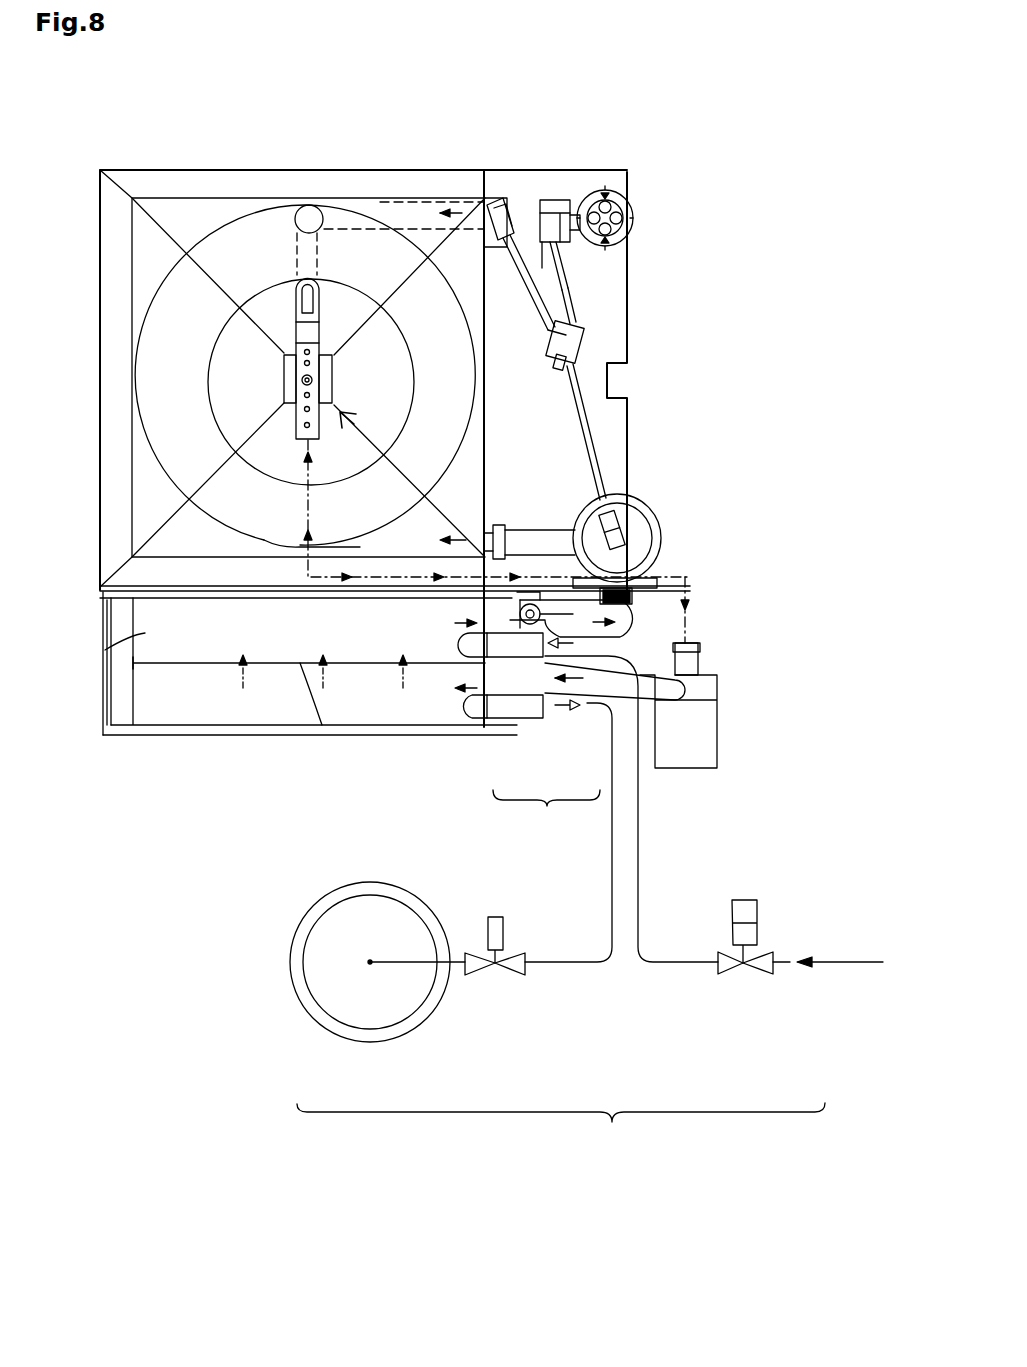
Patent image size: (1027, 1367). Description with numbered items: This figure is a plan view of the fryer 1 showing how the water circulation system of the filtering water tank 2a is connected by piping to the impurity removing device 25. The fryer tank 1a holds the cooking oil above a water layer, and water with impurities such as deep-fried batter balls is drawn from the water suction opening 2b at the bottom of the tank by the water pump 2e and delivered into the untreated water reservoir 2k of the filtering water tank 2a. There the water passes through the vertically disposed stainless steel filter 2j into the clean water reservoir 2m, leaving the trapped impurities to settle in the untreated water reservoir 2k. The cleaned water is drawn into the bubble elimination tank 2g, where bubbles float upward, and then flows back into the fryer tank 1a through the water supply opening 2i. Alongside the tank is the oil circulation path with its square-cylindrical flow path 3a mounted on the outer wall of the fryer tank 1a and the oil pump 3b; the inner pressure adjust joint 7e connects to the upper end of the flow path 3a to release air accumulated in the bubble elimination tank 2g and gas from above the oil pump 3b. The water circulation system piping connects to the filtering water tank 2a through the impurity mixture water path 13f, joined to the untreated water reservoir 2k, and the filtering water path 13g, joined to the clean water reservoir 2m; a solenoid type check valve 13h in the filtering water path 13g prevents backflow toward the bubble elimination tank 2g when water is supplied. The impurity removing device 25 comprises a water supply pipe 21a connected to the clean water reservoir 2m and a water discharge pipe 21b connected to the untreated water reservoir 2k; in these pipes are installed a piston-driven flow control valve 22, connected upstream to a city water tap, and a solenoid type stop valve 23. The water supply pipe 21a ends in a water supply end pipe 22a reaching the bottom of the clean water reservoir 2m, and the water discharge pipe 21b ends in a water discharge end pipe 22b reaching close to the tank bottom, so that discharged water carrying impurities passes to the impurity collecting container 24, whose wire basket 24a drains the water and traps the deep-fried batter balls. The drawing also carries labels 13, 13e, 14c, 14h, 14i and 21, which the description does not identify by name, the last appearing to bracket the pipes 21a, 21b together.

The fryer 1 is at (270, 158).
The fryer tank 1a is at (150, 252).
The filtering water tank 2a is at (278, 733).
The water suction opening 2b is at (298, 382).
The water pump 2e is at (717, 724).
The bubble elimination tank 2g is at (655, 530).
The water supply opening 2i is at (482, 542).
The filter 2j is at (300, 665).
The untreated water reservoir 2k is at (168, 716).
The clean water reservoir 2m is at (105, 650).
The square-cylindrical flow path 3a is at (497, 200).
The oil pump 3b is at (633, 214).
The inner pressure adjust joint 7e is at (578, 346).
The switching valve 13 is at (704, 600).
The rotor 13e is at (618, 524).
The impurity mixture water path 13f is at (640, 586).
The filtering water path 13g is at (634, 626).
The check valve 13h is at (640, 598).
The nozzle slot 14c is at (305, 302).
The nozzle hole 14h is at (300, 362).
The nozzle hole 14i is at (298, 402).
The water feed passage 21 is at (546, 814).
The water supply pipe 21a is at (532, 648).
The water discharge pipe 21b is at (527, 712).
The flow control valve 22 is at (757, 976).
The water supply end pipe 22a is at (462, 648).
The water discharge end pipe 22b is at (467, 710).
The stop valve 23 is at (503, 973).
The impurity collecting container 24 is at (395, 1036).
The wire basket 24a is at (343, 1028).
The impurity removing device 25 is at (561, 911).